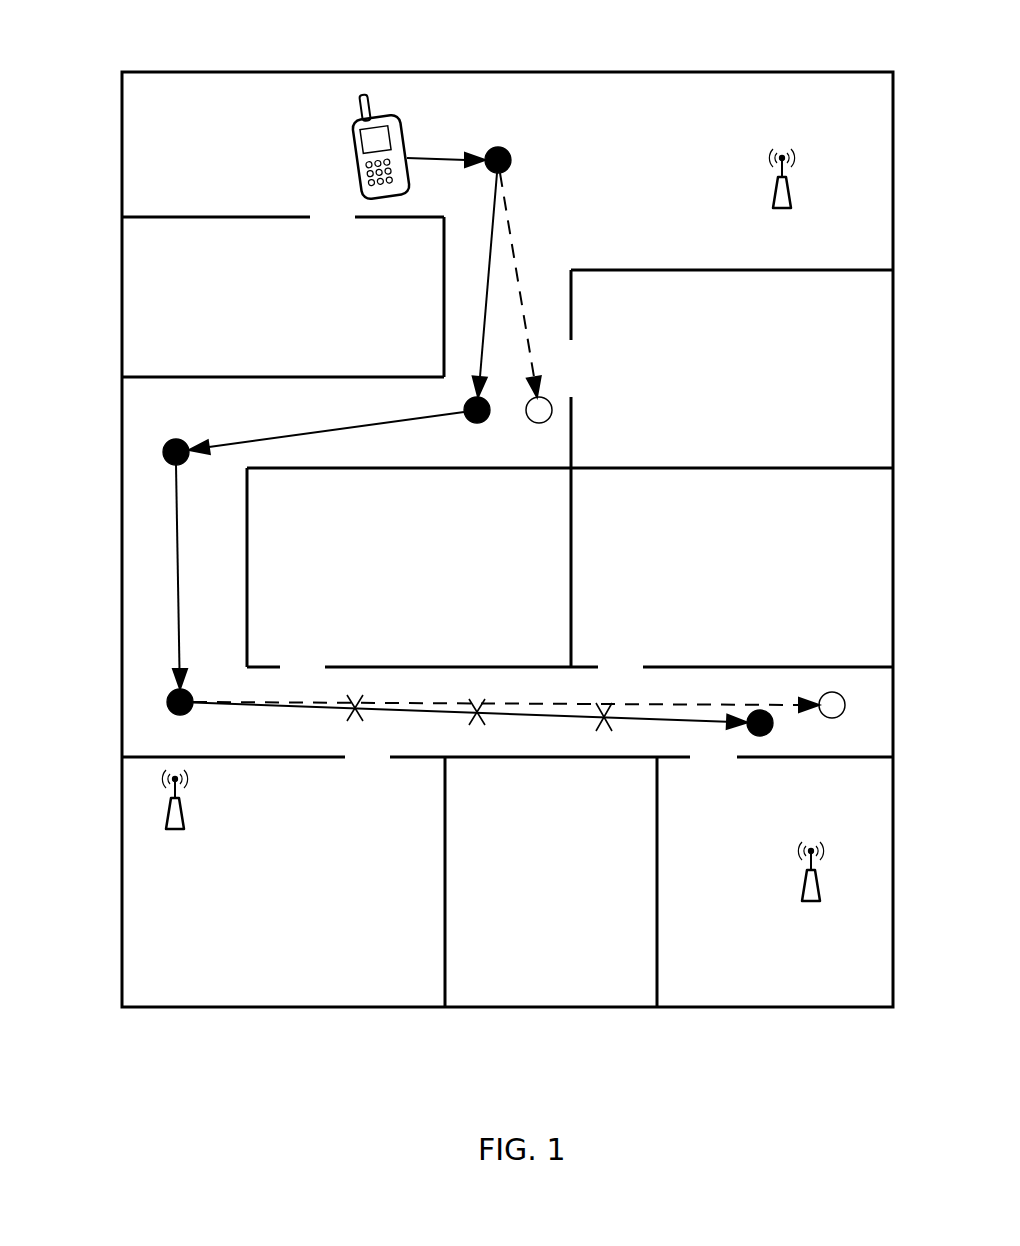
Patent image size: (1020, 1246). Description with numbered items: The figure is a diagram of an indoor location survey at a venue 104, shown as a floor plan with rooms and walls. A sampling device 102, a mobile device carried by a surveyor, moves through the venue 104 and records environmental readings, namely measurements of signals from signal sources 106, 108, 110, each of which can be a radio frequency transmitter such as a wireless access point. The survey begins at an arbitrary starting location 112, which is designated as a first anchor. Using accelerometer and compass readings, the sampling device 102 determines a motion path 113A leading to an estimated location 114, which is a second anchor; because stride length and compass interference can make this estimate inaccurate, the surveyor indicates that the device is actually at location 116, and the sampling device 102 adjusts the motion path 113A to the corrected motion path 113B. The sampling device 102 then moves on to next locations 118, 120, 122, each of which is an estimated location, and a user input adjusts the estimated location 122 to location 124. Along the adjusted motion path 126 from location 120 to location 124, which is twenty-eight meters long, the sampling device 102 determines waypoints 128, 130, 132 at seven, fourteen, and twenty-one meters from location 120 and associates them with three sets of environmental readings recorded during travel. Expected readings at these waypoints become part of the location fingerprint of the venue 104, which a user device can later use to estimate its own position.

The sampling device 102 is at (365, 110).
The venue 104 is at (507, 72).
The signal source 106 is at (773, 187).
The signal source 108 is at (805, 871).
The signal source 110 is at (185, 808).
The location 112 is at (512, 149).
The motion path 113A is at (517, 240).
The motion path 113B is at (487, 298).
The estimated location 114 is at (548, 397).
The location 116 is at (476, 423).
The next location 118 is at (163, 453).
The next location 120 is at (166, 702).
The estimated location 122 is at (822, 696).
The location 124 is at (762, 737).
The adjusted motion path 126 is at (667, 724).
The waypoint 128 is at (353, 718).
The waypoint 130 is at (475, 722).
The waypoint 132 is at (600, 731).